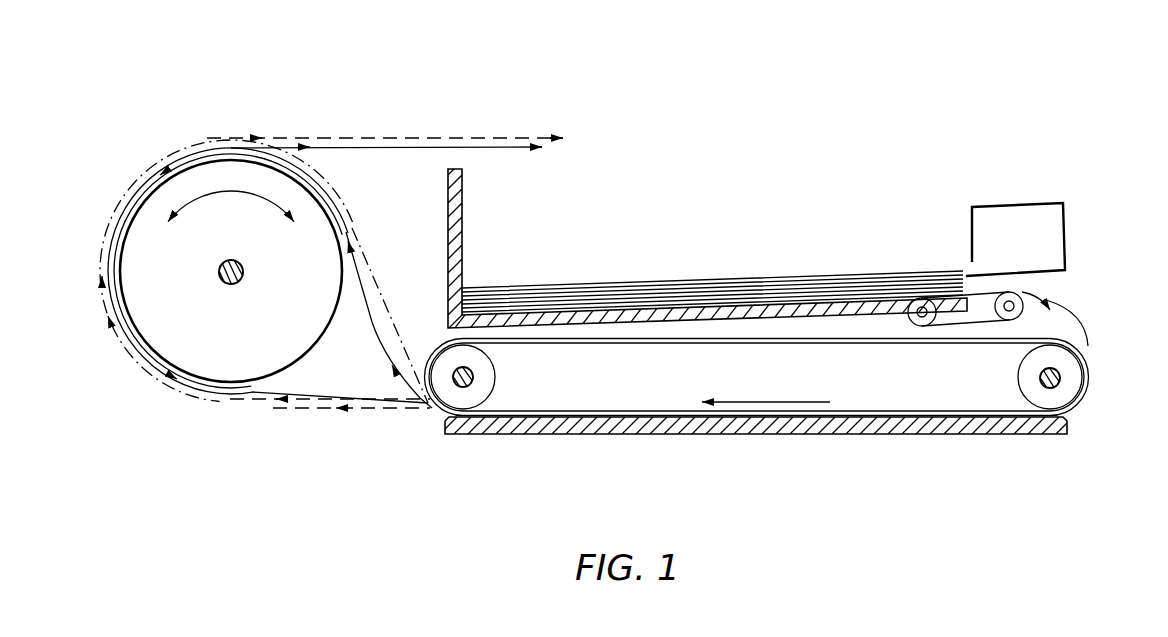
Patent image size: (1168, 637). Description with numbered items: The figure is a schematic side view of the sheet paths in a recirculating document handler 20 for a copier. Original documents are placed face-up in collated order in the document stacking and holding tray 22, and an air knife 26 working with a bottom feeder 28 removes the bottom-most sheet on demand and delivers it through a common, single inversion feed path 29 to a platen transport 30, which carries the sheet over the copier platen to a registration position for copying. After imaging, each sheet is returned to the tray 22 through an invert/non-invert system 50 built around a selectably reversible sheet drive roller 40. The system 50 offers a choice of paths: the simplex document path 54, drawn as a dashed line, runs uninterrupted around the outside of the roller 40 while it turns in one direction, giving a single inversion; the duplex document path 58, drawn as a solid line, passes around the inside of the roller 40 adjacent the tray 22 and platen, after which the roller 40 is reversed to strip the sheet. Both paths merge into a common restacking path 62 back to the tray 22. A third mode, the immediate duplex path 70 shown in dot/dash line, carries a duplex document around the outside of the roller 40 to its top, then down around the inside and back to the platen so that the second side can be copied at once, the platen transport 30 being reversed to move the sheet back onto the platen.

The recirculating document handler 20 is at (536, 262).
The document stacking and holding tray 22 is at (688, 312).
The air knife 26 is at (980, 229).
The bottom feeder 28 is at (972, 326).
The feed path 29 is at (1066, 334).
The platen transport 30 is at (583, 413).
The sheet drive roller 40 is at (122, 242).
The invert/non-invert system 50 is at (242, 122).
The simplex document path 54 is at (311, 409).
The duplex document path 58 is at (375, 354).
The restacking path 62 is at (422, 137).
The immediate duplex path 70 is at (378, 290).